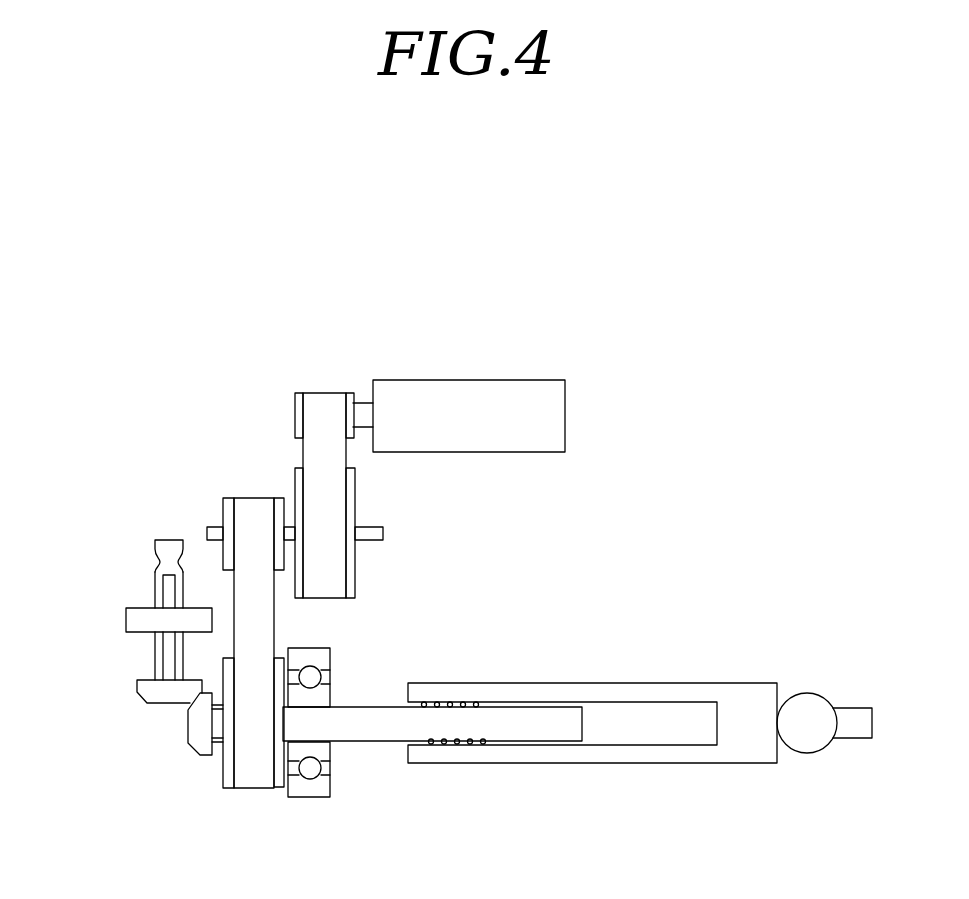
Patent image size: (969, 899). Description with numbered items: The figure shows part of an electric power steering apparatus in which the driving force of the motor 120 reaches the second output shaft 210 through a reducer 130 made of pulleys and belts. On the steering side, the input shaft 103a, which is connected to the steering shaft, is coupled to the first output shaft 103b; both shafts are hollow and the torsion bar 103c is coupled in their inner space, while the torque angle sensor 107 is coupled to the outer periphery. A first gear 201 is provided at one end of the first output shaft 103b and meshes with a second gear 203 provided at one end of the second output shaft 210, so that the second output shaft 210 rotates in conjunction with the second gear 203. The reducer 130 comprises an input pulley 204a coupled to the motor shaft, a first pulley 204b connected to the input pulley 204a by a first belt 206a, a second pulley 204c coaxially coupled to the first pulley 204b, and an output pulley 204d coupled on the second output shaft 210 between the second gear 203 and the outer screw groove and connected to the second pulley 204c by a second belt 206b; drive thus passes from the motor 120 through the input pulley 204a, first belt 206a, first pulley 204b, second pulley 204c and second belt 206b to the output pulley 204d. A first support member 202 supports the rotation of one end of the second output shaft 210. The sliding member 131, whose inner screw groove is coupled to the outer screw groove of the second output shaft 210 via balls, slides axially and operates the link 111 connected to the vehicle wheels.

The motor 120 is at (467, 390).
The input pulley 204a is at (298, 417).
The first belt 206a is at (310, 457).
The first pulley 204b is at (353, 568).
The second pulley 204c is at (232, 513).
The second belt 206b is at (262, 620).
The output pulley 204d is at (227, 775).
The first support member 202 is at (310, 770).
The second output shaft 210 is at (543, 722).
The sliding member 131 is at (657, 757).
The link 111 is at (850, 715).
The input shaft 103a is at (168, 545).
The first output shaft 103b is at (158, 652).
The torsion bar 103c is at (168, 597).
The torque angle sensor 107 is at (128, 617).
The first gear 201 is at (137, 688).
The second gear 203 is at (195, 722).
The reducer 130 is at (187, 783).